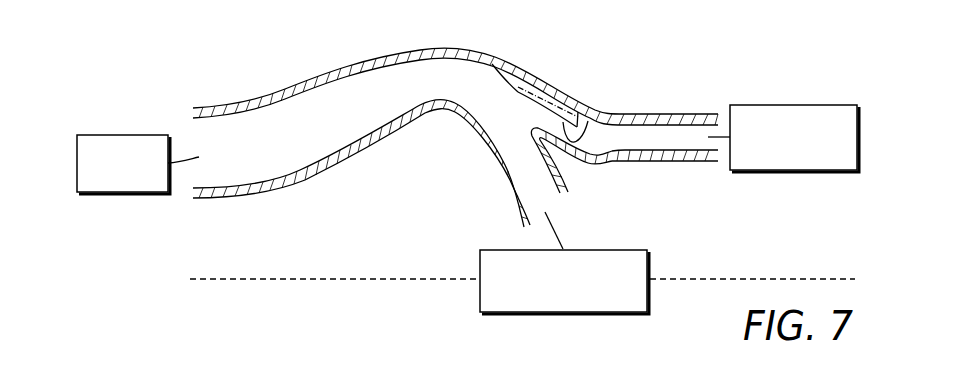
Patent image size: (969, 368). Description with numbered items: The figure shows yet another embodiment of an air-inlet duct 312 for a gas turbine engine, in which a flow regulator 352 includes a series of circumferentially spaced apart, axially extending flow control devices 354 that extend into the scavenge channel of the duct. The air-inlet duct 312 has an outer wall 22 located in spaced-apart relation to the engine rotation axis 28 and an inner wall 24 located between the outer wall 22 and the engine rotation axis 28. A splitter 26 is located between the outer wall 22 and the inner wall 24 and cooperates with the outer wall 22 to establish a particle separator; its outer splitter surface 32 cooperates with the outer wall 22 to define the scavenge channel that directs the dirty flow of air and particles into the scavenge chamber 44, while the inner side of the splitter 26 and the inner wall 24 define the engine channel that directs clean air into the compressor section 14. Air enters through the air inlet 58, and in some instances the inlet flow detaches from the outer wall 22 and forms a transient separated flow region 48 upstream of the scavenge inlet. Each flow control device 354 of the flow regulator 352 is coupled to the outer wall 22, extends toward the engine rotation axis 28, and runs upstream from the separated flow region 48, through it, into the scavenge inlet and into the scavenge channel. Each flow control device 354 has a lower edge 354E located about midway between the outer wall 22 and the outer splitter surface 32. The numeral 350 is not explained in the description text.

The compressor section 14 is at (600, 313).
The outer wall 22 is at (291, 97).
The inner wall 24 is at (306, 178).
The splitter 26 is at (564, 166).
The engine rotation axis 28 is at (343, 281).
The outer splitter surface 32 is at (647, 151).
The scavenge chamber 44 is at (797, 171).
The separated flow region 48 is at (548, 70).
The air inlet 58 is at (122, 193).
The air-inlet duct 312 is at (679, 73).
The splitter 350 is at (508, 52).
The flow regulator 352 is at (528, 48).
The flow control device 354 is at (512, 84).
The lower edge 354E is at (587, 143).